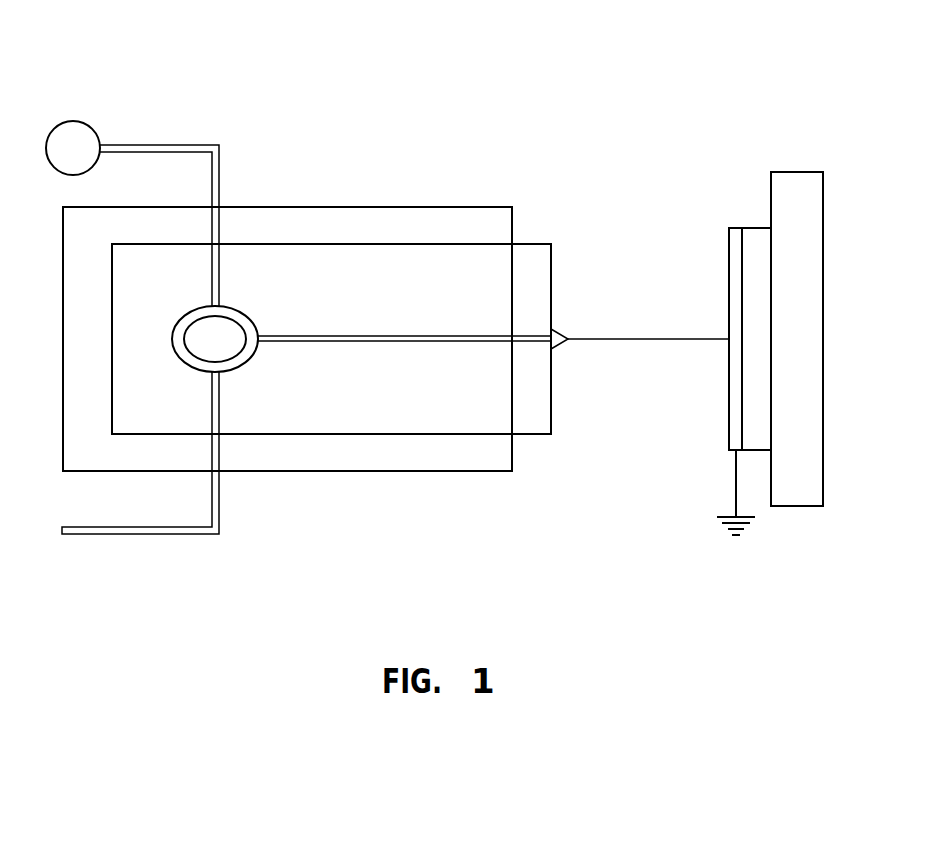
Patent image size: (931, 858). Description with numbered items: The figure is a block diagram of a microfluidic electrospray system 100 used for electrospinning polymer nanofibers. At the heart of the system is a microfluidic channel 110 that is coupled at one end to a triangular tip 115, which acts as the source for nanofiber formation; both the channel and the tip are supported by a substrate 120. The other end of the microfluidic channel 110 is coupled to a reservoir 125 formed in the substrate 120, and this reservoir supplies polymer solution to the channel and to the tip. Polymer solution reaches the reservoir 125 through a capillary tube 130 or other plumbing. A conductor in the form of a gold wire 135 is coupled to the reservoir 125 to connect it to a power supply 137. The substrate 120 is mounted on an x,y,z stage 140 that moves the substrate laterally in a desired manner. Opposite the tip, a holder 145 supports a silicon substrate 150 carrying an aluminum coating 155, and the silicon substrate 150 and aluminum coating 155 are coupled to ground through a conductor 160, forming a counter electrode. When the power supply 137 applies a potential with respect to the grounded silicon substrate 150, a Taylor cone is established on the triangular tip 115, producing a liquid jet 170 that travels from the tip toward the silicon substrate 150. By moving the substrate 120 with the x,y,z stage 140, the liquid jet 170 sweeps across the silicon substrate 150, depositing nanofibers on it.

The microfluidic electrospray system 100 is at (645, 68).
The microfluidic channel 110 is at (404, 334).
The triangular tip 115 is at (558, 343).
The substrate 120 is at (552, 273).
The reservoir 125 is at (246, 313).
The capillary tube 130 is at (140, 535).
The gold wire 135 is at (159, 142).
The power supply 137 is at (73, 119).
The x,y,z stage 140 is at (367, 205).
The holder 145 is at (796, 171).
The silicon substrate 150 is at (756, 227).
The aluminum coating 155 is at (728, 405).
The conductor 160 is at (733, 483).
The liquid jet 170 is at (649, 336).